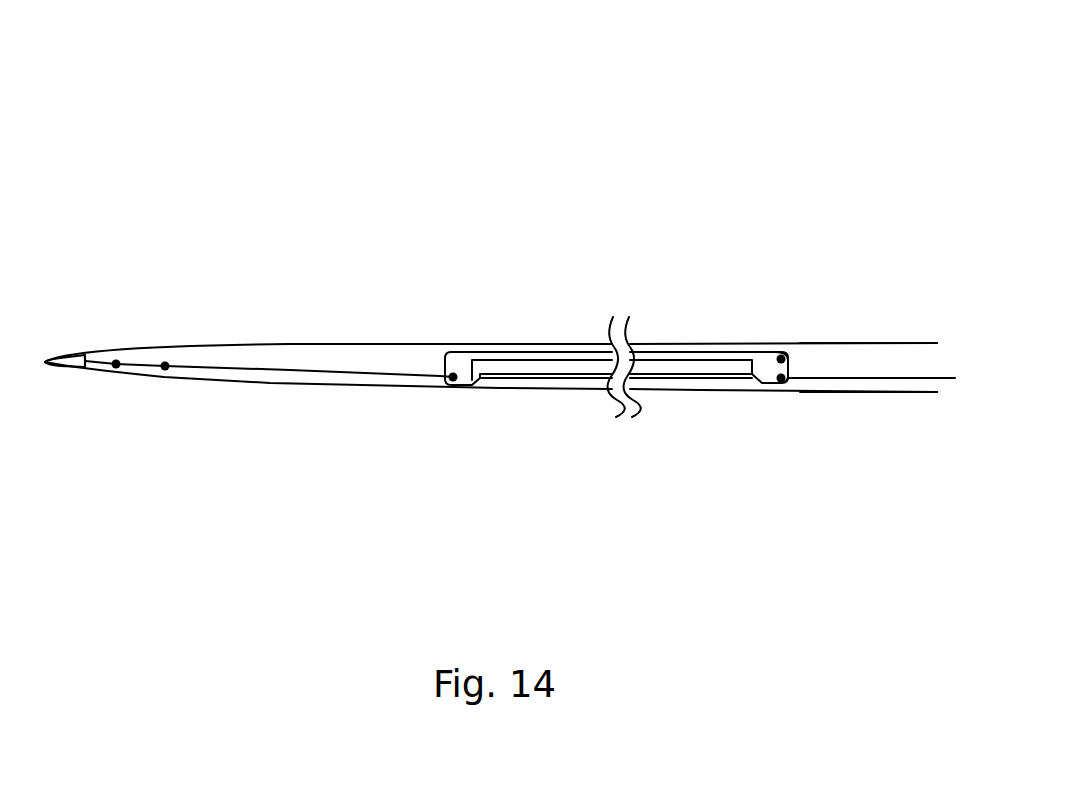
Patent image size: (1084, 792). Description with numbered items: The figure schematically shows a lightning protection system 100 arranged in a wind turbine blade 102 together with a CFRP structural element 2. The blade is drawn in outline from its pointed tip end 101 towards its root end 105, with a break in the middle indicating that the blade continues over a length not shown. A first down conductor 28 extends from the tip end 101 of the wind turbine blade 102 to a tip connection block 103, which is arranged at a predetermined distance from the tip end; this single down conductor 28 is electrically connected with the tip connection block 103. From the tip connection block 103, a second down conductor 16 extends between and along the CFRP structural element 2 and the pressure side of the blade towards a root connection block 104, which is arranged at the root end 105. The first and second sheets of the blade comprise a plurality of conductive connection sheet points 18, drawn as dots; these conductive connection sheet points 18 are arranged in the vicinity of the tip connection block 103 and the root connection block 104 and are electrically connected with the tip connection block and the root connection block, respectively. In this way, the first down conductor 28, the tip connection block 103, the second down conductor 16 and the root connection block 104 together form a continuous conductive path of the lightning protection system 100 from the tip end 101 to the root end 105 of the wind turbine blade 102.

The lightning protection system 100 is at (503, 136).
The tip end 101 is at (122, 346).
The wind turbine blade 102 is at (350, 345).
The first down conductor 28 is at (220, 369).
The tip connection block 103 is at (453, 349).
The conductive connection sheet points 18 is at (460, 370).
The second down conductor 16 is at (498, 356).
The CFRP structural element 2 is at (571, 366).
The root connection block 104 is at (791, 368).
The root end 105 is at (911, 343).